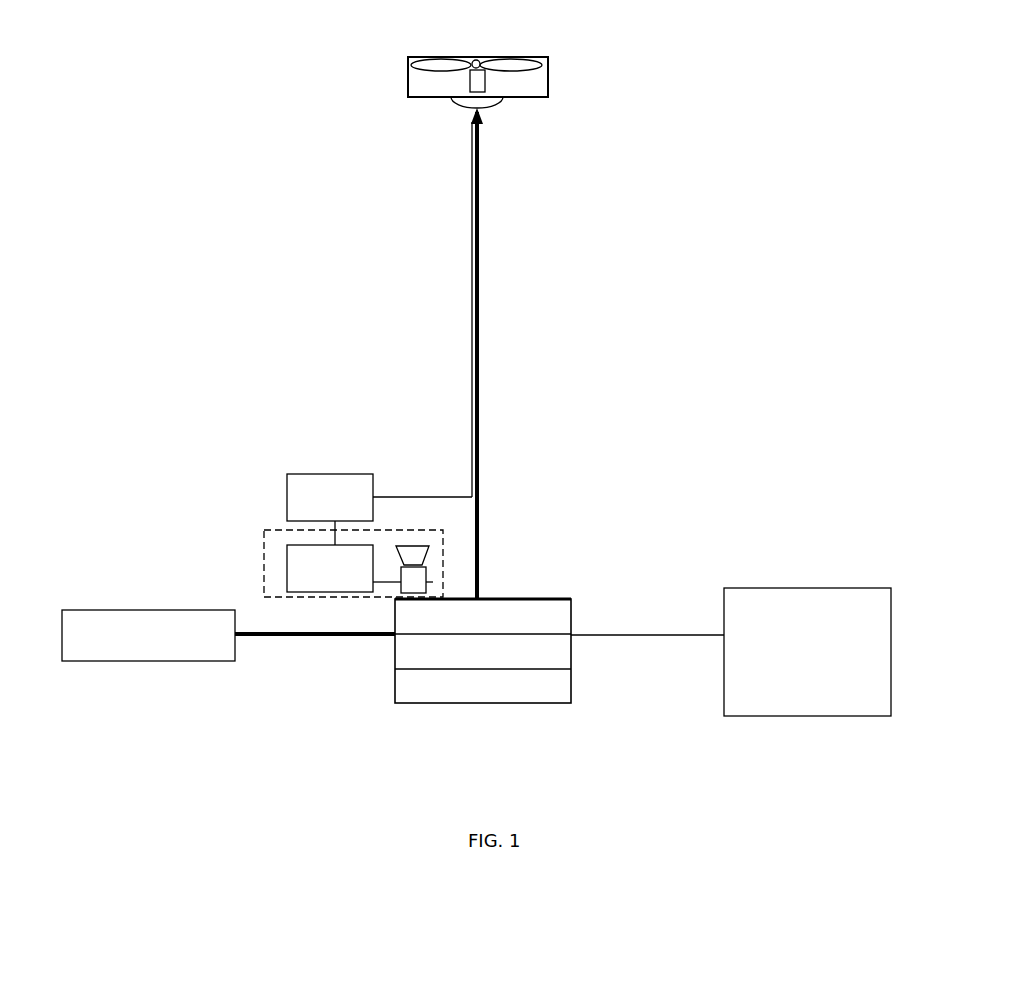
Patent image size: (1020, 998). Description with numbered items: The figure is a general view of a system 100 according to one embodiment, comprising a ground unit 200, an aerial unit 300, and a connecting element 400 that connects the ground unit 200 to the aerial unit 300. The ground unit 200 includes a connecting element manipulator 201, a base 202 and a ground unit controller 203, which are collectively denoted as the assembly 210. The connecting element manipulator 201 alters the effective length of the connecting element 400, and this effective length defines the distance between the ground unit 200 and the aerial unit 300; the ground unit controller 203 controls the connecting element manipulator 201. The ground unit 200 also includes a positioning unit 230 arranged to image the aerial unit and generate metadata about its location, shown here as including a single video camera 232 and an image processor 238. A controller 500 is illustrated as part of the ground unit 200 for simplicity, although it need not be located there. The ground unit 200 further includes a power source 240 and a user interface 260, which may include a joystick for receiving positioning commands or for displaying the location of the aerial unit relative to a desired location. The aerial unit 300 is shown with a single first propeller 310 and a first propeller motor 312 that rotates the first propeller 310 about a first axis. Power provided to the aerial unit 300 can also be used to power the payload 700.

The system 100 is at (247, 731).
The ground unit 200 is at (200, 568).
The connecting element manipulator 201 is at (483, 621).
The base 202 is at (483, 656).
The ground unit controller 203 is at (483, 687).
The ground unit assembly 210 is at (484, 719).
The positioning unit 230 is at (263, 534).
The video camera 232 is at (418, 558).
The image processor 238 is at (344, 568).
The power source 240 is at (228, 635).
The user interface 260 is at (731, 652).
The aerial unit 300 is at (572, 84).
The first propeller 310 is at (498, 55).
The first propeller motor 312 is at (487, 83).
The connecting element 400 is at (479, 300).
The controller 500 is at (379, 509).
The payload 700 is at (468, 102).